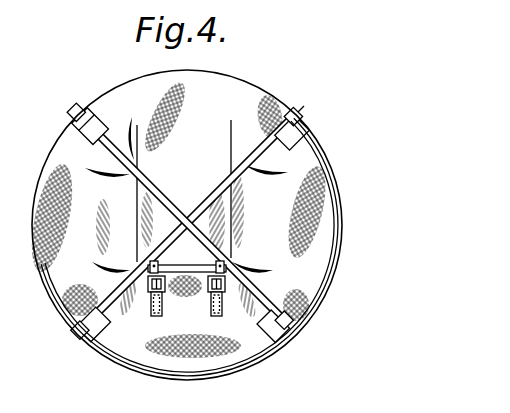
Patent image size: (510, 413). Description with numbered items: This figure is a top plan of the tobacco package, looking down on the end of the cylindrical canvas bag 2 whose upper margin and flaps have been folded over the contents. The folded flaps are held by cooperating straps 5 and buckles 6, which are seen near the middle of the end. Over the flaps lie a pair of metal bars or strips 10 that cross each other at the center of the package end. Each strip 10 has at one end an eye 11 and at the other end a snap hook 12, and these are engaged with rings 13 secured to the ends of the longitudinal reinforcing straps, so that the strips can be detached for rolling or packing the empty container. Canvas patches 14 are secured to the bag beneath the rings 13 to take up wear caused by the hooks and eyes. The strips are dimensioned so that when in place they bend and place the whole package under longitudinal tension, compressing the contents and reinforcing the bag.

The bag 2 is at (258, 90).
The straps 5 is at (172, 260).
The buckles 6 is at (206, 290).
The metal bars or strips 10 is at (211, 203).
The eye 11 is at (298, 113).
The snap hook 12 is at (97, 338).
The rings 13 is at (305, 117).
The canvas patches 14 is at (91, 117).